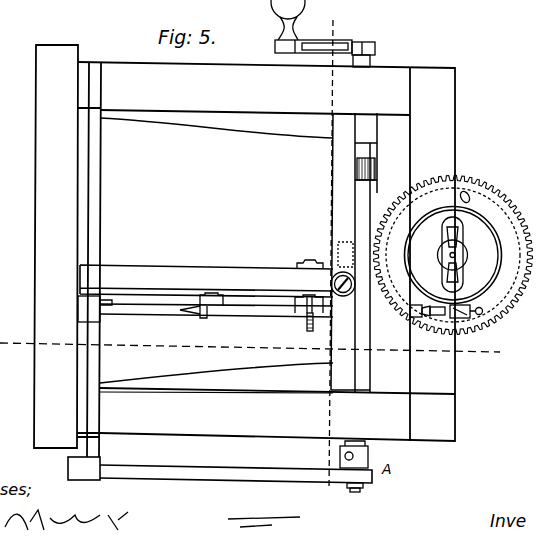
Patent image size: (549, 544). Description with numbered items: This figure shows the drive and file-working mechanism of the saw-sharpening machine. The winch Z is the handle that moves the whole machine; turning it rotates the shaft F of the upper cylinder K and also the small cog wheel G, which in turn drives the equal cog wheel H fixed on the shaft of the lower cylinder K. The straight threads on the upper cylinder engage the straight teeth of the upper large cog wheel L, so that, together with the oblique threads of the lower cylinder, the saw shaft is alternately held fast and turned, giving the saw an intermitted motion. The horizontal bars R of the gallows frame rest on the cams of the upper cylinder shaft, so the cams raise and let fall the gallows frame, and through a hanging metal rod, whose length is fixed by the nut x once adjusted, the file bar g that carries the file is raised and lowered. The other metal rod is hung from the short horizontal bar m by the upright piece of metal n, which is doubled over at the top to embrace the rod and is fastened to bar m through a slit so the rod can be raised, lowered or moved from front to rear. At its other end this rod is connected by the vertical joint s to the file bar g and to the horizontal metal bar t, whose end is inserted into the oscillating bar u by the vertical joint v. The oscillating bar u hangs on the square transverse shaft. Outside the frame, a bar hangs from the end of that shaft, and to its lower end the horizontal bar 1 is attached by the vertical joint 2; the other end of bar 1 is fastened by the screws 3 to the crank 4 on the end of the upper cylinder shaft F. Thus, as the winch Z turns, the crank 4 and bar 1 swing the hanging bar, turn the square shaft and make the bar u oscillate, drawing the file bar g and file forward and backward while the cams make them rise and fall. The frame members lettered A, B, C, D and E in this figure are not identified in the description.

The left standard / frame post A is at (56, 246).
The lower frame member B is at (55, 409).
The right standard / frame post C is at (427, 91).
The bottom cross beam D is at (421, 417).
The section line E is at (250, 339).
The shaft of the upper cylinder F is at (345, 212).
The small cog wheel G is at (376, 175).
The equal cog wheel H is at (325, 503).
The cylinder K is at (343, 284).
The upper large cog wheel L is at (453, 253).
The horizontal bars of the gallows frame R is at (352, 254).
The winch Z is at (323, 33).
The oscillating bar u is at (89, 309).
The vertical joint v is at (106, 314).
The horizontal metal bar t is at (216, 316).
The metal bar carrying the file g is at (268, 307).
The short horizontal bar m is at (211, 299).
The vertical joint s is at (193, 320).
The nut x is at (307, 315).
The upright piece of metal n is at (315, 324).
The horizontal bar 1 is at (183, 471).
The vertical joint 2 is at (84, 478).
The screw 3 is at (358, 493).
The crank 4 is at (354, 454).